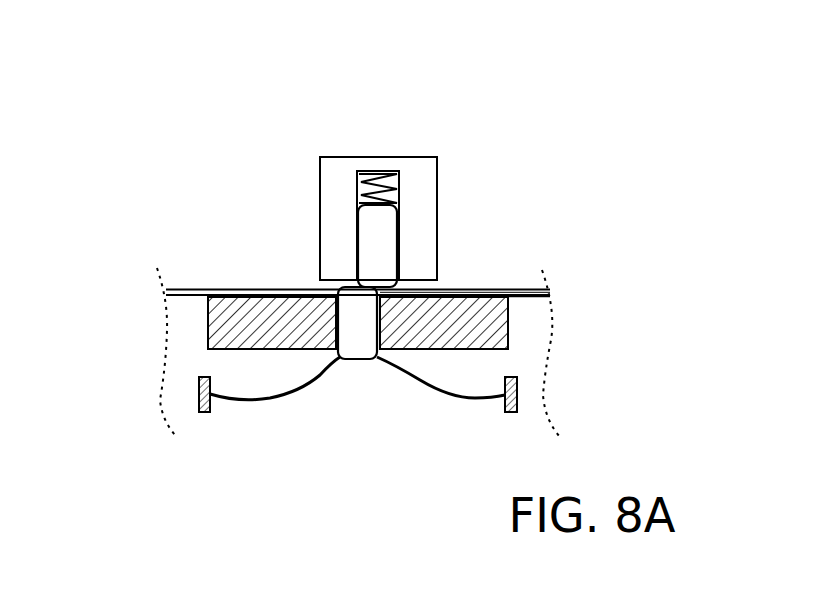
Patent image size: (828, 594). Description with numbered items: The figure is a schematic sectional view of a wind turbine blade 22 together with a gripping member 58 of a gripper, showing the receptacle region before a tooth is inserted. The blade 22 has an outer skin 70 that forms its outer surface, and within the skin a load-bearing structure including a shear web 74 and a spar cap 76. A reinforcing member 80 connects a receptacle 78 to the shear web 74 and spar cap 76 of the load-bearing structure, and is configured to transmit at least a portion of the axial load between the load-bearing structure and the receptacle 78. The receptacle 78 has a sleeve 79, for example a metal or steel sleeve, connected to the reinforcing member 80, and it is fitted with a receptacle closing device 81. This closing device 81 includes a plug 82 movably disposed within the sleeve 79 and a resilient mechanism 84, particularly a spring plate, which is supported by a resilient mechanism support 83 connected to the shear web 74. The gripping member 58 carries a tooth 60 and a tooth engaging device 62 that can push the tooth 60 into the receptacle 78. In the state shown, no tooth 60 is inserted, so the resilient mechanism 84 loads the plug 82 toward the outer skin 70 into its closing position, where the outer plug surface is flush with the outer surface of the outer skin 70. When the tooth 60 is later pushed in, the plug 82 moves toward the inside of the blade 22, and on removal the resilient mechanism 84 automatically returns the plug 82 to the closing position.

The blade 22 is at (150, 286).
The gripping member 58 is at (438, 140).
The tooth 60 is at (358, 205).
The tooth engaging device 62 is at (358, 173).
The outer skin 70 is at (196, 288).
The shear web 74 is at (538, 297).
The spar cap 76 is at (510, 294).
The receptacle 78 is at (338, 282).
The sleeve 79 is at (380, 313).
The reinforcing member 80 is at (208, 326).
The receptacle closing device 81 is at (316, 425).
The plug 82 is at (378, 360).
The resilient mechanism support 83 is at (199, 395).
The resilient mechanism 84 is at (270, 400).